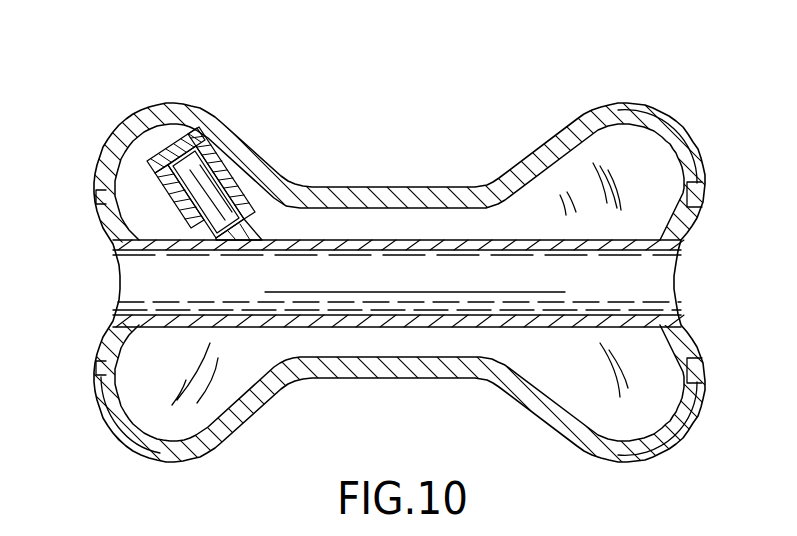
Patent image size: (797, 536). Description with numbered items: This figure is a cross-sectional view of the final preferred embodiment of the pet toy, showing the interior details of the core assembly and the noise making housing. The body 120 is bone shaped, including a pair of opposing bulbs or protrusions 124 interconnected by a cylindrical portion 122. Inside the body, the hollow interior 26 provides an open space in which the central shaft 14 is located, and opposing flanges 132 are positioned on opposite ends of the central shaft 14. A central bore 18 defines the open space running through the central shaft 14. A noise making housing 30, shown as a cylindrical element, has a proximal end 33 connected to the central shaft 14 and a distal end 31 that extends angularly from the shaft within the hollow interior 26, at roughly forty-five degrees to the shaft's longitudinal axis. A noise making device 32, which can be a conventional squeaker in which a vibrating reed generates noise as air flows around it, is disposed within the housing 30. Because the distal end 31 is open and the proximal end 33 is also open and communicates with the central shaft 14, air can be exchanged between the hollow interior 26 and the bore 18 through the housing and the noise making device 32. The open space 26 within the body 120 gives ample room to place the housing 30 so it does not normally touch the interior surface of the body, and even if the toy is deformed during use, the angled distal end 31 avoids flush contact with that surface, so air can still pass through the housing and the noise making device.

The body 120 is at (462, 153).
The bulbs or protrusions 124 is at (188, 120).
The cylindrical portion 122 is at (390, 187).
The central shaft 14 is at (420, 240).
The central bore 18 is at (463, 254).
The hollow interior 26 is at (128, 177).
The flanges 132 is at (98, 218).
The noise making housing 30 is at (240, 206).
The distal end 31 is at (180, 150).
The noise making device 32 is at (195, 182).
The proximal end 33 is at (243, 240).